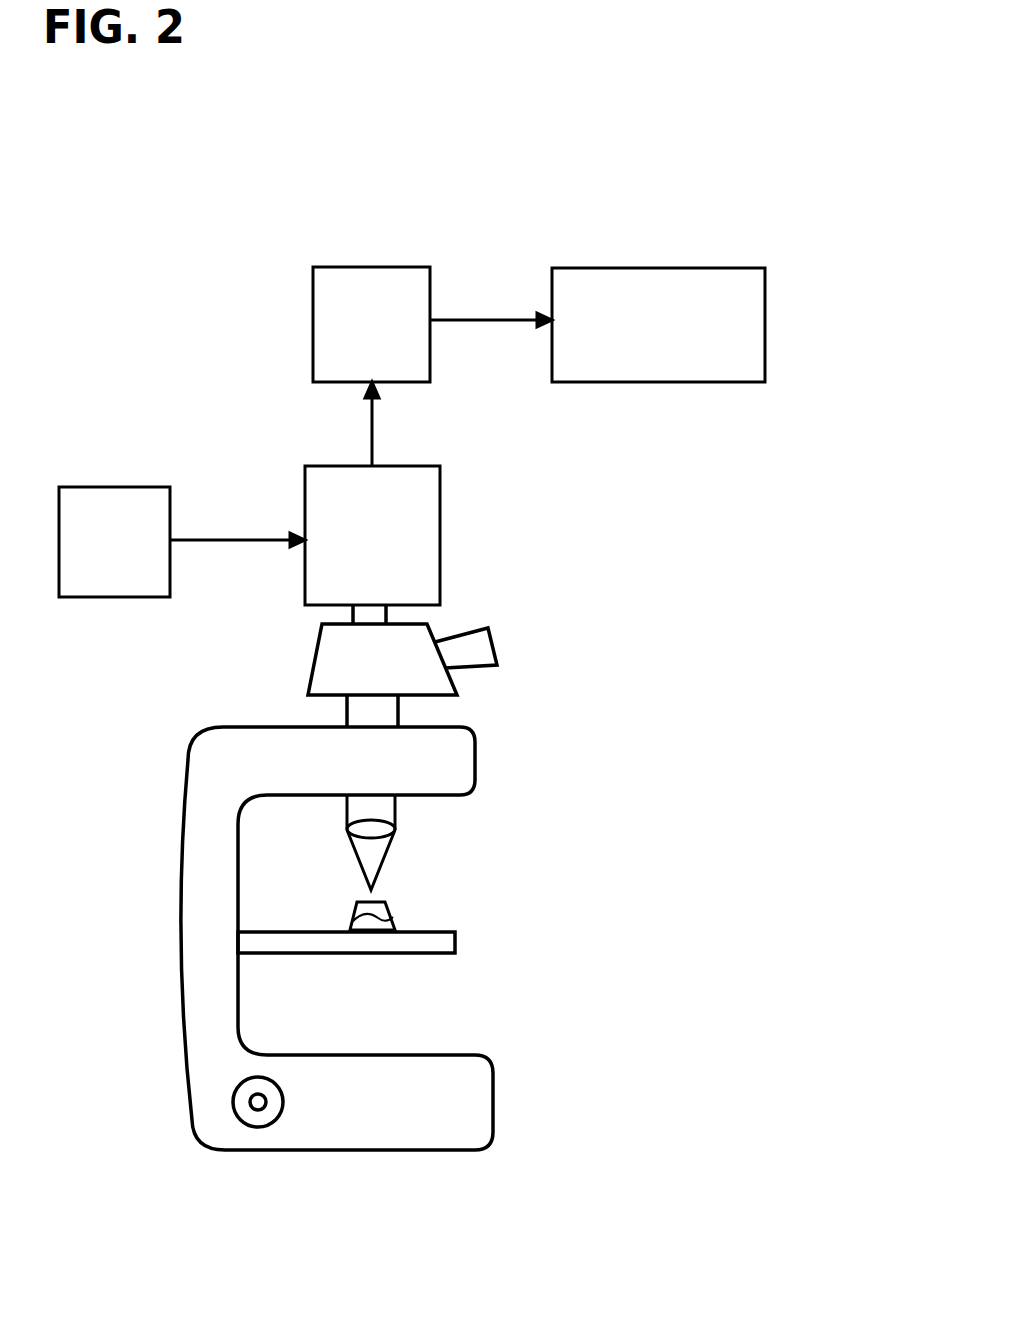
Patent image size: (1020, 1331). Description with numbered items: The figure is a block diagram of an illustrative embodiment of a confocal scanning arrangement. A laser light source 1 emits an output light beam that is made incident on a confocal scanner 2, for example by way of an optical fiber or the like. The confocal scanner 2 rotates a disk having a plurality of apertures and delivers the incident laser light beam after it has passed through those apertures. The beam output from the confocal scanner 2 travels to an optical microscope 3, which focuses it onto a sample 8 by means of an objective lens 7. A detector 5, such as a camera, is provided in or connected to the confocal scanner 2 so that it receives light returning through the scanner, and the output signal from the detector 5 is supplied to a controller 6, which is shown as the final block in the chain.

The laser light source 1 is at (92, 500).
The confocal scanner 2 is at (428, 540).
The optical microscope 3 is at (460, 763).
The detector 5 is at (320, 335).
The controller 6 is at (577, 285).
The objective lens 7 is at (380, 829).
The sample 8 is at (372, 911).